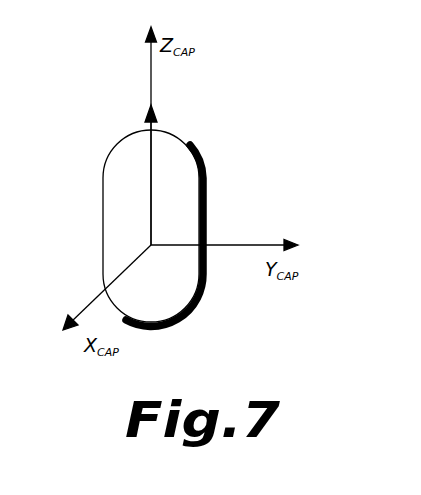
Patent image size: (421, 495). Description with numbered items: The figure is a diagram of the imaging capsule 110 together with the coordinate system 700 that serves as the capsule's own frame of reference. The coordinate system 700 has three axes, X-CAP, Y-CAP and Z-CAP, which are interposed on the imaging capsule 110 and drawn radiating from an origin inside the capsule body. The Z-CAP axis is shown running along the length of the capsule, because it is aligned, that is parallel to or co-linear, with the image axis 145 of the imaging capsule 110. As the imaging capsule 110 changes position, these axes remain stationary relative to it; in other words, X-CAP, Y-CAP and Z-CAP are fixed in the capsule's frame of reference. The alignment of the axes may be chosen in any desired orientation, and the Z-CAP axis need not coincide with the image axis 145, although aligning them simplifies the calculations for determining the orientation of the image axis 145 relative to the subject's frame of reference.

The imaging capsule 110 is at (206, 227).
The image axis 145 is at (153, 172).
The coordinate system 700 is at (262, 138).